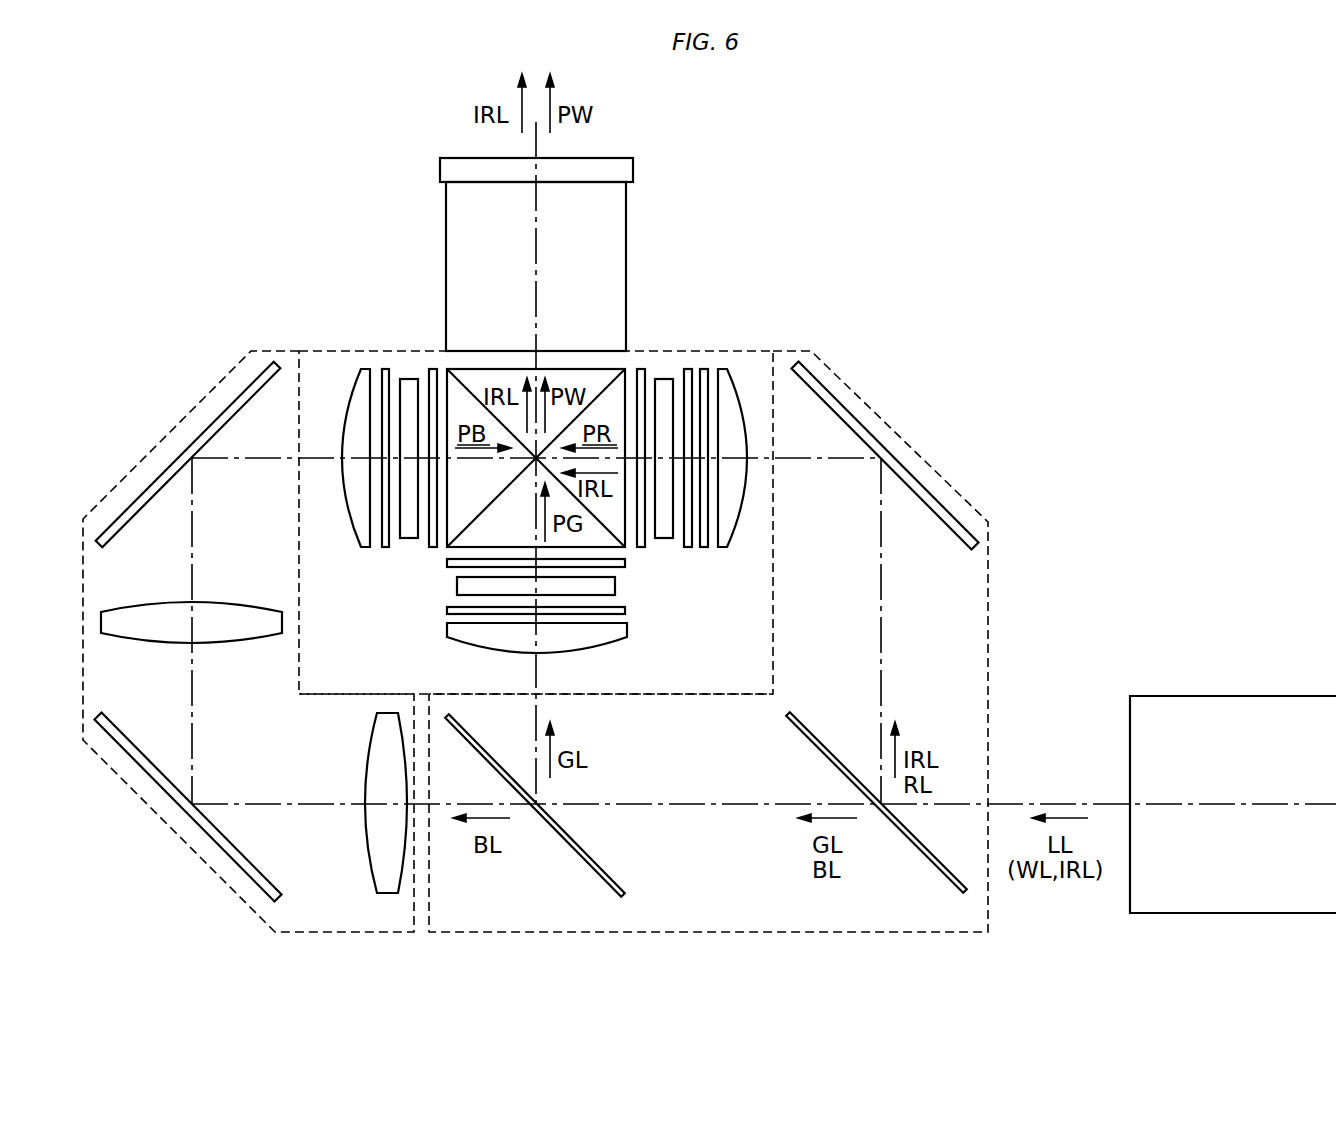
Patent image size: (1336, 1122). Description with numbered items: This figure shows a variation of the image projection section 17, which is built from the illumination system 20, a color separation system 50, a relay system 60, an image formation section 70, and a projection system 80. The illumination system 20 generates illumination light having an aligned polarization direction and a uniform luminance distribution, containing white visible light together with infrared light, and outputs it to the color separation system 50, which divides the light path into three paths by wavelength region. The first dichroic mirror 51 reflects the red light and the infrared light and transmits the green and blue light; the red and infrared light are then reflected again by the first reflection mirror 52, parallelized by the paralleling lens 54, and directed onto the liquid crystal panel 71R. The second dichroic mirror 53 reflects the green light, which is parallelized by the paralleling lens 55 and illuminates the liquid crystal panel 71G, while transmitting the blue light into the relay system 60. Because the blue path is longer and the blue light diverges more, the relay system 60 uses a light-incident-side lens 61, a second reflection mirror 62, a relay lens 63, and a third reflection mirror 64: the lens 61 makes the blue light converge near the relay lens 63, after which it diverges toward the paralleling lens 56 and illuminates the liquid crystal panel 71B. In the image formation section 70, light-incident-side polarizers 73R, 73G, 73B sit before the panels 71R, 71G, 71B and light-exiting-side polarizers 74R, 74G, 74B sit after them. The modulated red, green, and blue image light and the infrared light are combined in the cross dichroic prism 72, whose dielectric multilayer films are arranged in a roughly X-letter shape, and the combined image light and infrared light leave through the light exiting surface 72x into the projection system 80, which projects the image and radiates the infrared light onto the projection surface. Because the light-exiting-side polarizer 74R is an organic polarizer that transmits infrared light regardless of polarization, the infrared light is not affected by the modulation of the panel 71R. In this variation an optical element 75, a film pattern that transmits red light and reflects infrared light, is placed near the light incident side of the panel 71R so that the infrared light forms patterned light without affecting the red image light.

The image projection section 17 is at (1052, 158).
The illumination system 20 is at (1263, 696).
The color separation system 50 is at (805, 349).
The first dichroic mirror 51 is at (928, 862).
The first reflection mirror 52 is at (941, 511).
The second dichroic mirror 53 is at (585, 862).
The paralleling lens 54 is at (730, 392).
The paralleling lens 55 is at (620, 628).
The paralleling lens 56 is at (353, 392).
The relay system 60 is at (272, 347).
The light-incident-side lens 61 is at (382, 843).
The second reflection mirror 62 is at (133, 752).
The relay lens 63 is at (235, 618).
The third reflection mirror 64 is at (140, 503).
The image formation section 70 is at (722, 232).
The liquid crystal panel 71B is at (410, 378).
The liquid crystal panel 71G is at (607, 587).
The liquid crystal panel 71R is at (663, 378).
The cross dichroic prism 72 is at (497, 377).
The light exiting surface 72x is at (580, 368).
The light-incident-side polarizer 73B is at (385, 368).
The light-incident-side polarizer 73G is at (447, 611).
The light-incident-side polarizer 73R is at (695, 368).
The light-exiting-side polarizer 74B is at (432, 368).
The light-exiting-side polarizer 74G is at (447, 562).
The light-exiting-side polarizer 74R is at (640, 368).
The optical element 75 is at (687, 548).
The projection system 80 is at (457, 204).